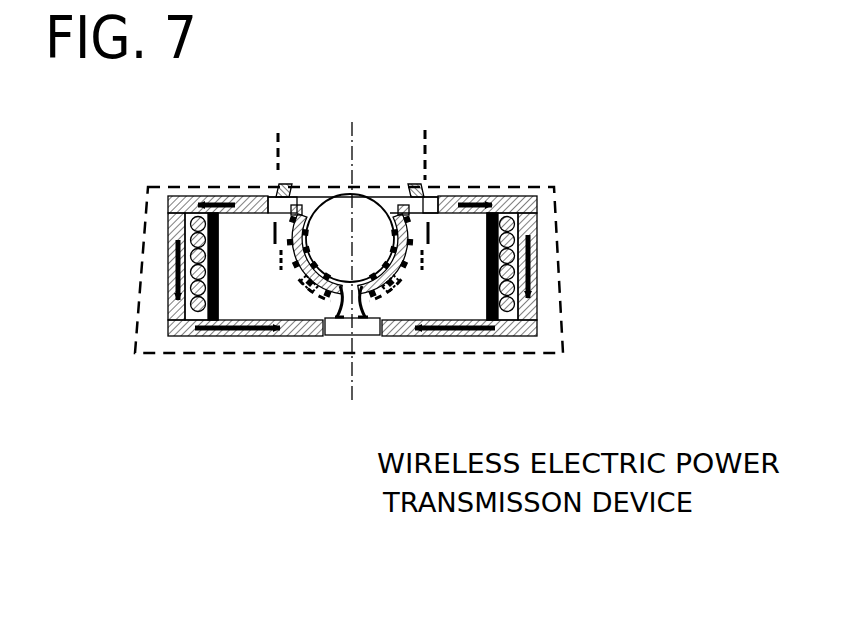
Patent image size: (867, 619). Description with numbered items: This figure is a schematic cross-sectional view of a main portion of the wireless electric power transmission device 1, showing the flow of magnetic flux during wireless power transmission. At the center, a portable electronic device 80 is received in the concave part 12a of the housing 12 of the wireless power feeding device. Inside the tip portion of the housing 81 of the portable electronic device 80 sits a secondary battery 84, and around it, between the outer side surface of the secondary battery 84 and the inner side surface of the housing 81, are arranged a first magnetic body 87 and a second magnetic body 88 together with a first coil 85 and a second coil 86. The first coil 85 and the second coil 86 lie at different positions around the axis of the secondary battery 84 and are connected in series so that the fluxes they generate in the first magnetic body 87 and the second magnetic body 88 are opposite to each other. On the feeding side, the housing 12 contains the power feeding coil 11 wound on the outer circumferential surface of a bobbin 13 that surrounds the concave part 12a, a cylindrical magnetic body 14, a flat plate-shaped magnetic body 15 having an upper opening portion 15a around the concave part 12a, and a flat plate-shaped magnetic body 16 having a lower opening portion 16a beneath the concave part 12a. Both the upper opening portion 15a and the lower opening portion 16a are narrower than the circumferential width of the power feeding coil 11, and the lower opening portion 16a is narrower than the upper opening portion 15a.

The wireless electric power transmission device 1 is at (391, 300).
The power feeding coil 11 is at (535, 225).
The housing 12 is at (557, 190).
The concave part 12a is at (277, 272).
The bobbin 13 is at (500, 193).
The cylindrical magnetic body 14 is at (520, 255).
The flat plate-shaped magnetic body 15 is at (440, 193).
The upper opening portion 15a is at (395, 200).
The flat plate-shaped magnetic body 16 is at (395, 320).
The lower opening portion 16a is at (363, 323).
The portable electronic device 80 is at (268, 152).
The housing 81 is at (275, 164).
The secondary battery 84 is at (340, 193).
The first coil 85 is at (308, 300).
The second coil 86 is at (405, 278).
The first magnetic body 87 is at (293, 270).
The second magnetic body 88 is at (435, 255).